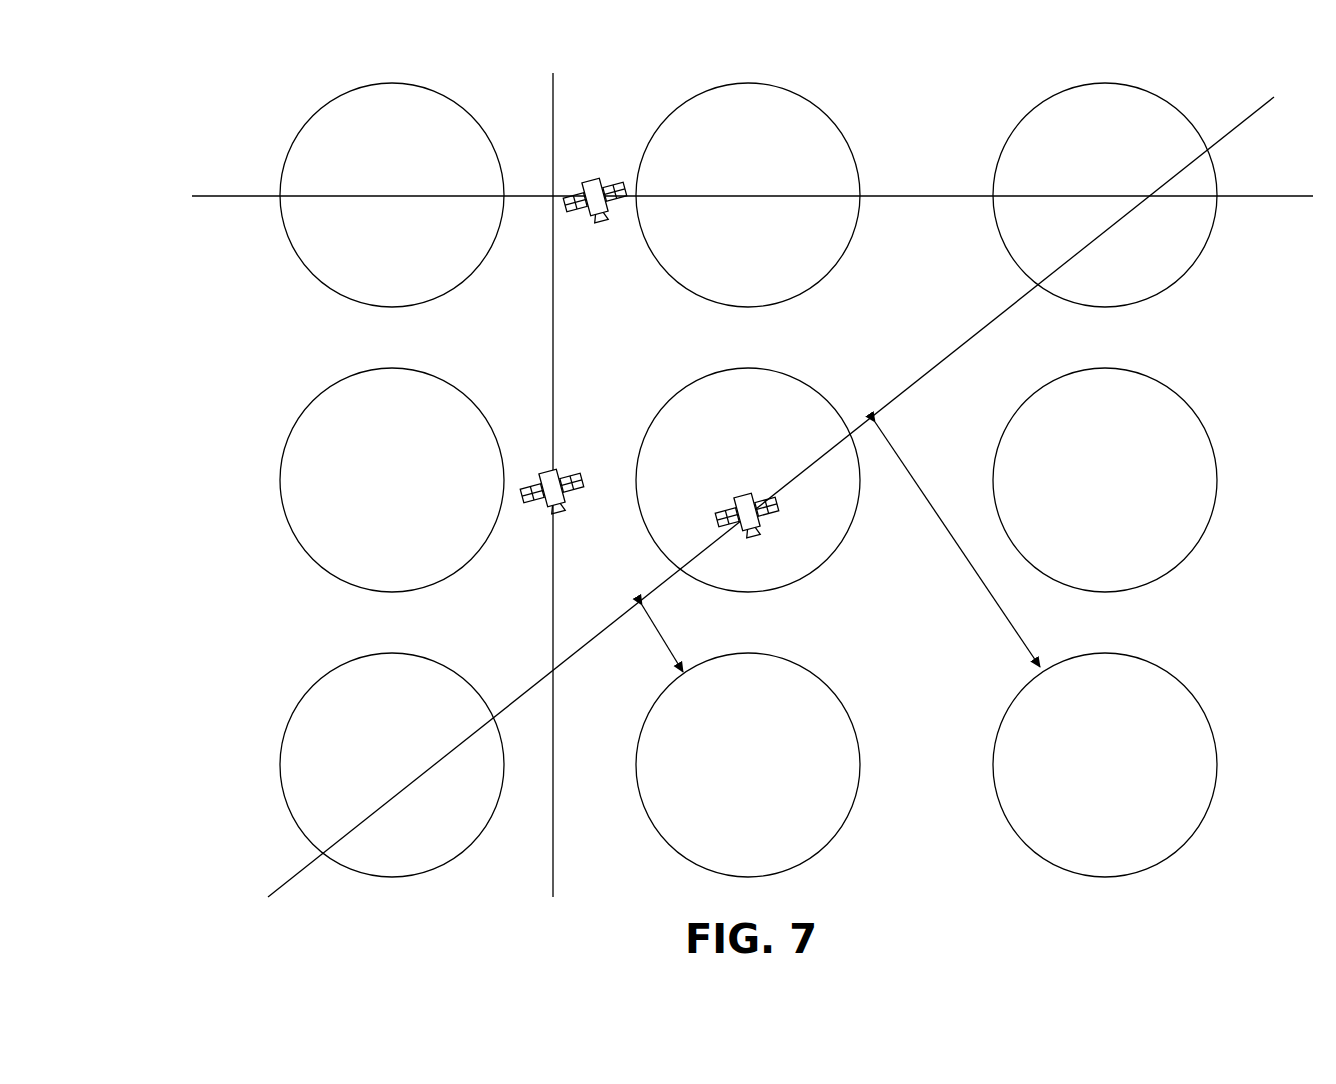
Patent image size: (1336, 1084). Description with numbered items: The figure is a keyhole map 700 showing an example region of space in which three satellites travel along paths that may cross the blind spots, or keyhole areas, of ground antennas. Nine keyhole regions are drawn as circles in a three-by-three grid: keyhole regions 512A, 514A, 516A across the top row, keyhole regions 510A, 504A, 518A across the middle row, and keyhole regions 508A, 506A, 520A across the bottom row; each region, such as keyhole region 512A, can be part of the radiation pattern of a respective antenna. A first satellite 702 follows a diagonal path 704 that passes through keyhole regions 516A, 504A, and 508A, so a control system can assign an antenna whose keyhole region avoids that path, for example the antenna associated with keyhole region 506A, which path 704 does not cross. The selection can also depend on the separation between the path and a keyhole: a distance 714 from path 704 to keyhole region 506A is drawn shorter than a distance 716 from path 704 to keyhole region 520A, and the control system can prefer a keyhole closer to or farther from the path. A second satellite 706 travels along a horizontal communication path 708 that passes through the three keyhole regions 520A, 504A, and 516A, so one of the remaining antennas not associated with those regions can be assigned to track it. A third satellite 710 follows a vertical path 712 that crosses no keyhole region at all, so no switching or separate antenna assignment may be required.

The keyhole map 700 is at (150, 126).
The satellite 702 is at (735, 497).
The path 704 is at (985, 330).
The satellite 706 is at (614, 186).
The communication path 708 is at (905, 194).
The satellite 710 is at (568, 472).
The path 712 is at (558, 313).
The distance 714 is at (663, 647).
The distance 716 is at (958, 550).
The keyhole region 504A is at (801, 382).
The keyhole region 506A is at (801, 667).
The keyhole region 508A is at (445, 667).
The keyhole region 510A is at (445, 382).
The keyhole region 512A is at (445, 97).
The coverage area 514A is at (801, 97).
The keyhole region 516A is at (1158, 97).
The keyhole region 518A is at (1158, 382).
The keyhole region 520A is at (1158, 667).